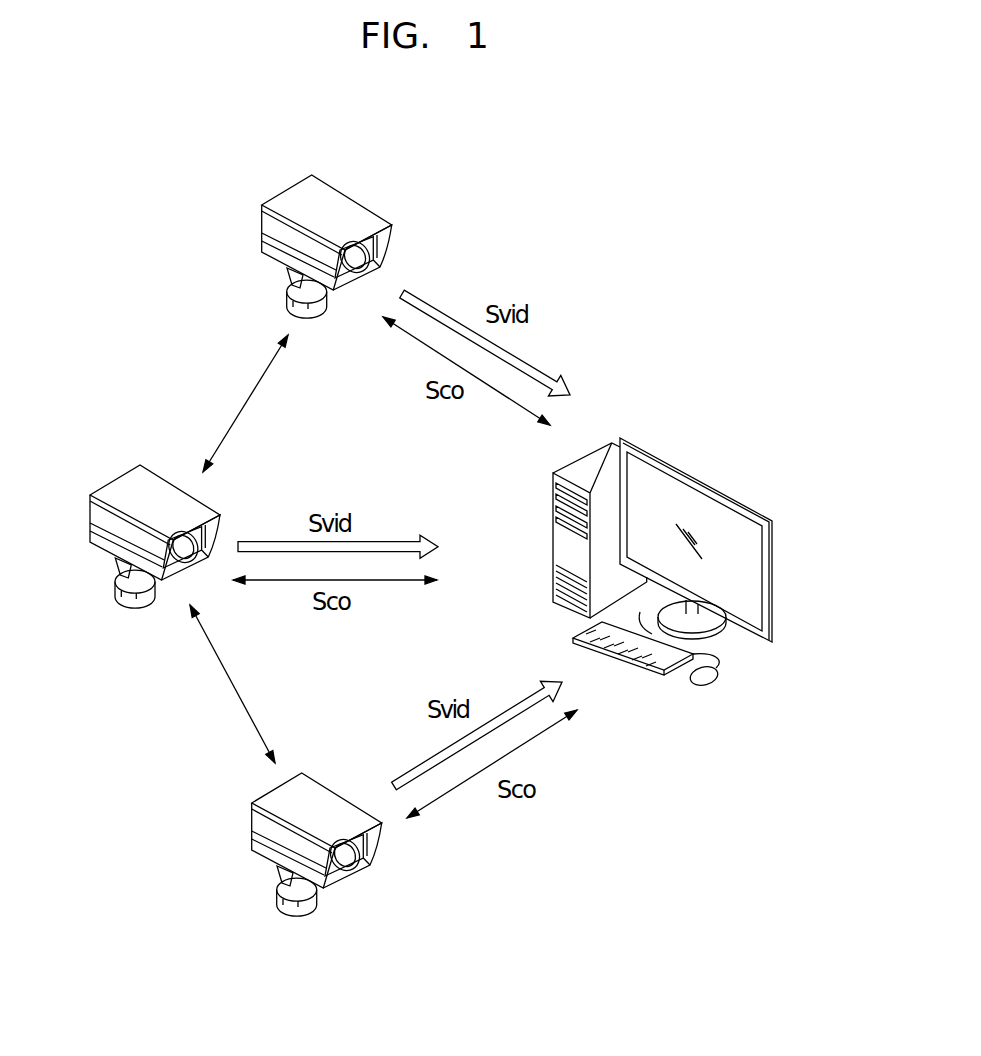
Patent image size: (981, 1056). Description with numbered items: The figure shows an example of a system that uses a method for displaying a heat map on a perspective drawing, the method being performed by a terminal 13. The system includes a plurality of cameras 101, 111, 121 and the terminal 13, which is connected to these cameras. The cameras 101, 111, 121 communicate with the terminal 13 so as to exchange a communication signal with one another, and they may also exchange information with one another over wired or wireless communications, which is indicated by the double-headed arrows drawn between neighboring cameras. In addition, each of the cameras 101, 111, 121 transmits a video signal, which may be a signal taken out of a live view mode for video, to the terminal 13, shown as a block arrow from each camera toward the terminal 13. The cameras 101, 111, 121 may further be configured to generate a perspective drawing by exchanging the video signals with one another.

The camera 101 is at (287, 190).
The camera 111 is at (132, 527).
The camera 121 is at (294, 835).
The terminal 13 is at (727, 472).